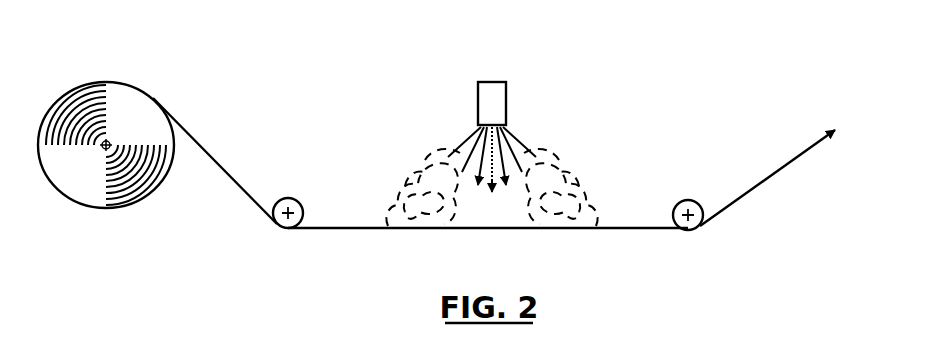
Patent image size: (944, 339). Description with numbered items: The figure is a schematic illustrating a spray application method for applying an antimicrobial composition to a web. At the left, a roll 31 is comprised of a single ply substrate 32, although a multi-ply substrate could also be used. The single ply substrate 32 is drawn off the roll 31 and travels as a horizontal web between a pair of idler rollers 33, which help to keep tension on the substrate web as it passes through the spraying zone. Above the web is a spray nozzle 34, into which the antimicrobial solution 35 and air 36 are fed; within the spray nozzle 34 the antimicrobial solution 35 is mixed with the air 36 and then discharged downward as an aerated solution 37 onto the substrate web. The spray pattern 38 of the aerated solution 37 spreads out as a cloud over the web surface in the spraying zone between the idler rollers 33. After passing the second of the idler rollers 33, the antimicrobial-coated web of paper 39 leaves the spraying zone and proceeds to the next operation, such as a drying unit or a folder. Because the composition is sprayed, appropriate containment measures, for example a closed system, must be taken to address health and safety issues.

The roll 31 is at (103, 208).
The single ply substrate 32 is at (196, 141).
The idler rollers 33 is at (288, 199).
The spray nozzle 34 is at (507, 98).
The antimicrobial solution 35 is at (484, 74).
The air 36 is at (499, 74).
The aerated solution 37 is at (466, 212).
The cloud 38 is at (574, 154).
The antimicrobial-coated web of paper 39 is at (785, 166).